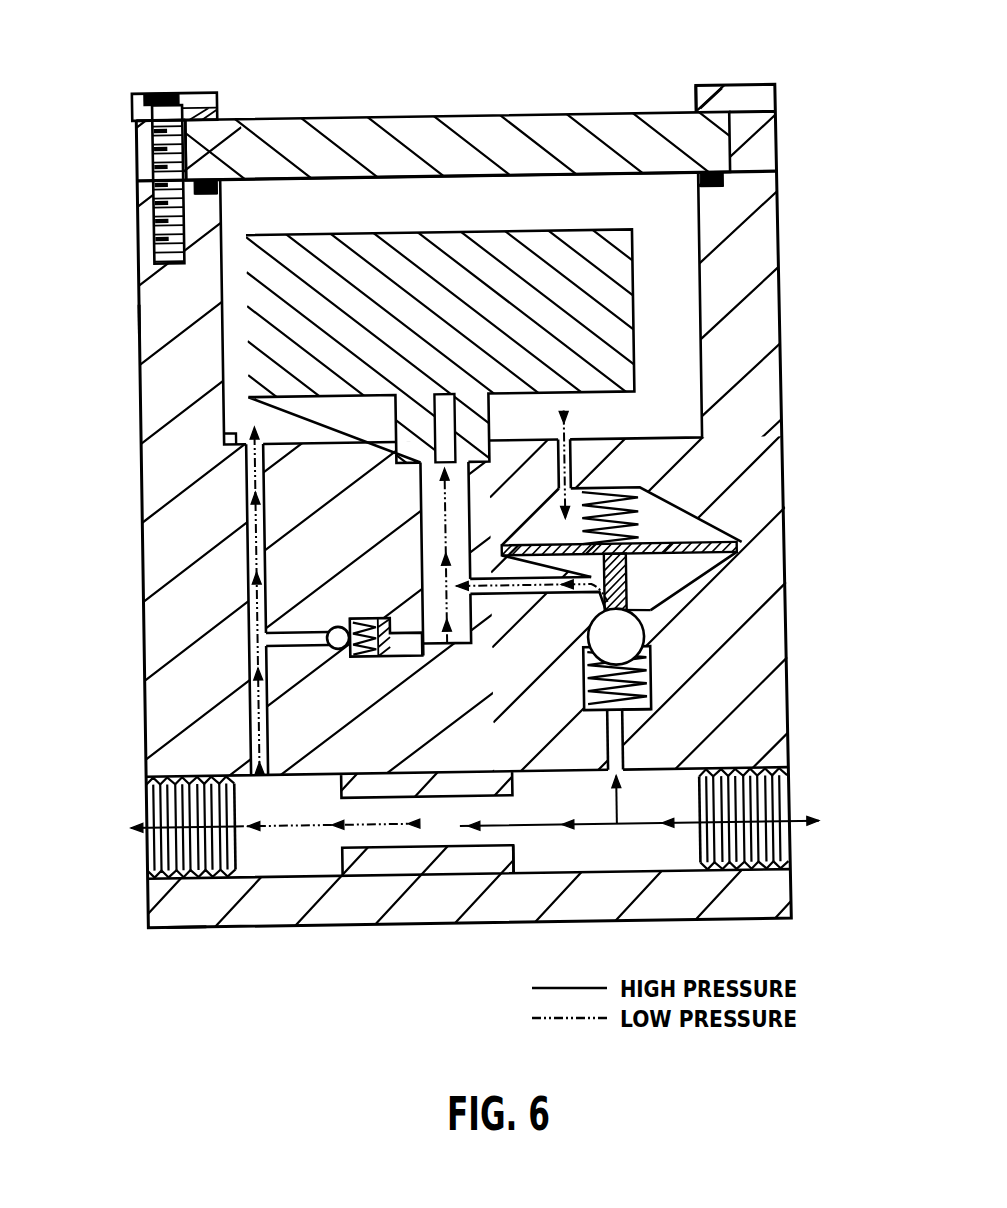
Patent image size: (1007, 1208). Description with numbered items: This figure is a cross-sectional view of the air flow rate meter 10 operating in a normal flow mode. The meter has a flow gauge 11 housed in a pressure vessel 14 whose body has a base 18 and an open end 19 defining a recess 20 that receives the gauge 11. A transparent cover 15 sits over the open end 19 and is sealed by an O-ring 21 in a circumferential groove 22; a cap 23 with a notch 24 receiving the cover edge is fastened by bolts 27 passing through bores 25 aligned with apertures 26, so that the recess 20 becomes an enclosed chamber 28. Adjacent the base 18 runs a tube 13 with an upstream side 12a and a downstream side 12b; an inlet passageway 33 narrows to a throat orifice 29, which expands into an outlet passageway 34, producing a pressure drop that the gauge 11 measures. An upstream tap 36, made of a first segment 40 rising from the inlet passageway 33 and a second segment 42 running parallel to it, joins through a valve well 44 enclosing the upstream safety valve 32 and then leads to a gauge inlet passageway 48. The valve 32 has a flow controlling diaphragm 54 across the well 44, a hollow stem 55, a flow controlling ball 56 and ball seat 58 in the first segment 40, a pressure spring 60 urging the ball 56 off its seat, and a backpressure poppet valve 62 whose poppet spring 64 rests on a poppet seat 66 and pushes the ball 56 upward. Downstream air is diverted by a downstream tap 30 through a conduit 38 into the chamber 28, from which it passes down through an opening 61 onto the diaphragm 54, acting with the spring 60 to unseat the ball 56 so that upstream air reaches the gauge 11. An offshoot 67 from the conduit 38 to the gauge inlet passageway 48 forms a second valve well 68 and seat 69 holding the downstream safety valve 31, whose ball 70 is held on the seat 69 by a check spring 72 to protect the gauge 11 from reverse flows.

The air flow rate meter 10 is at (781, 300).
The flow gauge 11 is at (640, 336).
The upstream side 12a is at (775, 885).
The downstream side 12b is at (150, 874).
The tube 13 is at (790, 846).
The pressure vessel 14 is at (142, 314).
The transparent cover 15 is at (466, 116).
The base 18 is at (175, 925).
The open end 19 is at (158, 180).
The recess 20 is at (233, 434).
The O-ring 21 is at (222, 188).
The circumferential groove 22 is at (214, 178).
The cap 23 is at (138, 96).
The notch 24 is at (218, 90).
The bores 25 is at (158, 140).
The apertures 26 is at (158, 228).
The bolts 27 is at (158, 258).
The enclosed chamber 28 is at (440, 219).
The throat orifice 29 is at (416, 839).
The downstream tap 30 is at (247, 530).
The downstream safety valve 31 is at (400, 650).
The upstream safety valve 32 is at (680, 575).
The inlet passageway 33 is at (617, 861).
The outlet passageway 34 is at (215, 805).
The upstream tap 36 is at (620, 735).
The conduit 38 is at (250, 480).
The first segment 40 is at (604, 745).
The second segment 42 is at (500, 598).
The valve well 44 is at (700, 535).
The gauge inlet passageway 48 is at (440, 520).
The flow controlling diaphragm 54 is at (736, 552).
The hollow stem 55 is at (627, 590).
The flow controlling ball 56 is at (630, 645).
The flow controlling ball seat 58 is at (642, 620).
The pressure spring 60 is at (640, 500).
The opening 61 is at (572, 424).
The backpressure poppet valve 62 is at (650, 680).
The backpressure poppet spring 64 is at (585, 700).
The backpressure poppet seat 66 is at (648, 712).
The offshoot 67 is at (266, 637).
The second valve well 68 is at (358, 615).
The seat 69 is at (322, 630).
The ball 70 is at (358, 658).
The check spring 72 is at (382, 658).